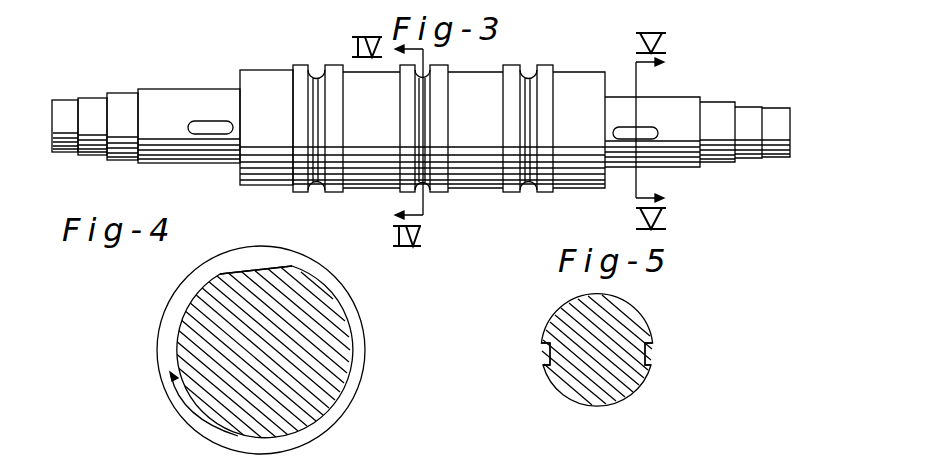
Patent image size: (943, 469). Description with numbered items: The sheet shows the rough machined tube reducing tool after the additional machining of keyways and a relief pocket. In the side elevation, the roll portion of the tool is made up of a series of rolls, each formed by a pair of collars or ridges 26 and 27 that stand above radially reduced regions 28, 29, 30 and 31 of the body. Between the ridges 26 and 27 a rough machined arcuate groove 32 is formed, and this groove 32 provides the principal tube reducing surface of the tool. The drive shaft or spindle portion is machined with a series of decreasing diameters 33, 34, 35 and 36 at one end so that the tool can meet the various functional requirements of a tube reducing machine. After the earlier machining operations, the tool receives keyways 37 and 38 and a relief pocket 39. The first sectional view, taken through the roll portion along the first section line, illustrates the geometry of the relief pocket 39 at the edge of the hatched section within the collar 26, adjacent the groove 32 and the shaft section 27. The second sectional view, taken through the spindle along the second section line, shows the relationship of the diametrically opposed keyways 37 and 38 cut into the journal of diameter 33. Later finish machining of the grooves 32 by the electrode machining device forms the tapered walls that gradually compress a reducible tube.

In FIG. 3, the collar or ridge 26 is at (297, 192).
In FIG. 4, the collar or ridge 26 is at (160, 318).
In FIG. 3, the collar or ridge 27 is at (333, 193).
In FIG. 4, the collar or ridge 27 is at (249, 270).
In FIG. 3, the radially reduced region 28 is at (260, 70).
In FIG. 3, the radially reduced region 29 is at (364, 176).
In FIG. 3, the radially reduced region 30 is at (481, 174).
In FIG. 3, the radially reduced region 31 is at (573, 179).
In FIG. 3, the arcuate groove 32 is at (315, 192).
In FIG. 4, the arcuate groove 32 is at (172, 375).
In FIG. 3, the decreasing diameter 33 is at (196, 73).
In FIG. 5, the decreasing diameter 33 is at (558, 308).
In FIG. 3, the decreasing diameter 34 is at (120, 93).
In FIG. 3, the decreasing diameter 35 is at (90, 98).
In FIG. 3, the decreasing diameter 36 is at (62, 100).
In FIG. 5, the keyway 37 is at (540, 347).
In FIG. 3, the keyway 38 is at (643, 133).
In FIG. 5, the keyway 38 is at (655, 347).
In FIG. 4, the relief pocket 39 is at (222, 276).